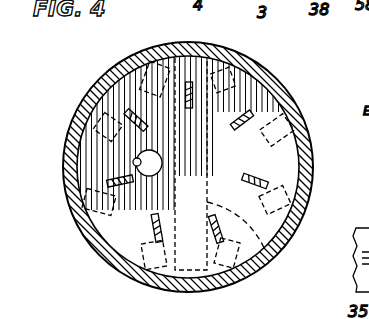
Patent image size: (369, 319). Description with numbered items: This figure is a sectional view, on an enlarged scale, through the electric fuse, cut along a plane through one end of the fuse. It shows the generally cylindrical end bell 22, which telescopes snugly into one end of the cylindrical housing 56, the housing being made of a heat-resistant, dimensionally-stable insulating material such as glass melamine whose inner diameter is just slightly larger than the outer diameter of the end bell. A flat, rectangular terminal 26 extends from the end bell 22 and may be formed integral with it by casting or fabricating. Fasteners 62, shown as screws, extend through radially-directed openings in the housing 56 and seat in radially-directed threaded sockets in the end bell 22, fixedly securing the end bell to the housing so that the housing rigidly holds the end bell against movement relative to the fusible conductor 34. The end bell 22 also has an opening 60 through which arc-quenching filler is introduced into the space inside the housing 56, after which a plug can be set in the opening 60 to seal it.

The end bell 22 is at (118, 232).
The terminal 26 is at (279, 253).
The fusible conductor 34 is at (131, 181).
The cylindrical housing 56 is at (290, 90).
The opening 60 is at (136, 160).
The fasteners 62 is at (63, 193).